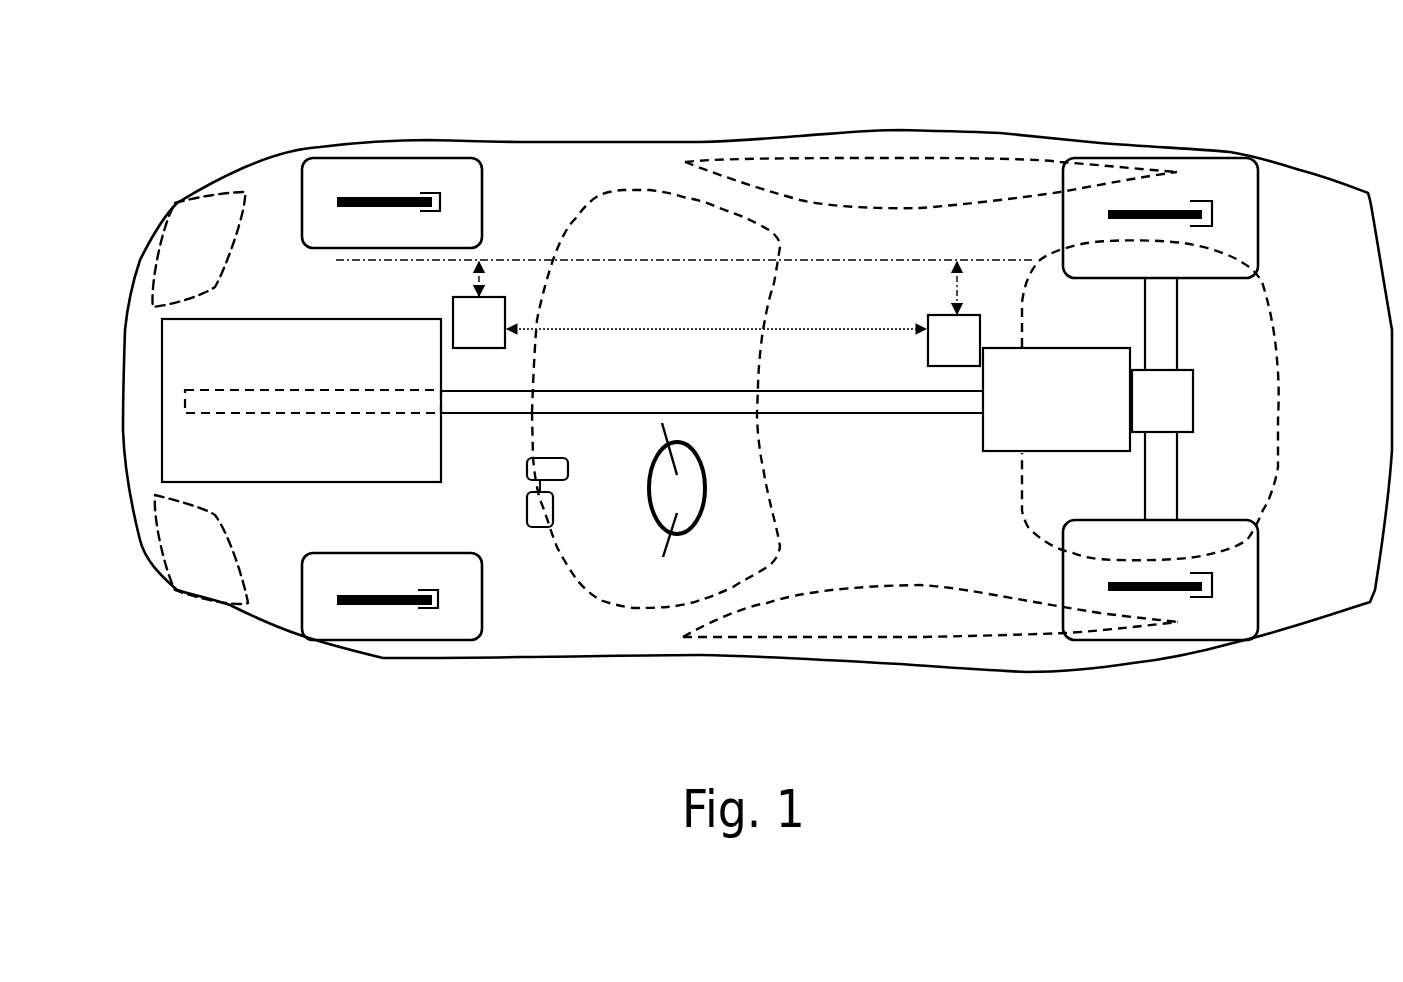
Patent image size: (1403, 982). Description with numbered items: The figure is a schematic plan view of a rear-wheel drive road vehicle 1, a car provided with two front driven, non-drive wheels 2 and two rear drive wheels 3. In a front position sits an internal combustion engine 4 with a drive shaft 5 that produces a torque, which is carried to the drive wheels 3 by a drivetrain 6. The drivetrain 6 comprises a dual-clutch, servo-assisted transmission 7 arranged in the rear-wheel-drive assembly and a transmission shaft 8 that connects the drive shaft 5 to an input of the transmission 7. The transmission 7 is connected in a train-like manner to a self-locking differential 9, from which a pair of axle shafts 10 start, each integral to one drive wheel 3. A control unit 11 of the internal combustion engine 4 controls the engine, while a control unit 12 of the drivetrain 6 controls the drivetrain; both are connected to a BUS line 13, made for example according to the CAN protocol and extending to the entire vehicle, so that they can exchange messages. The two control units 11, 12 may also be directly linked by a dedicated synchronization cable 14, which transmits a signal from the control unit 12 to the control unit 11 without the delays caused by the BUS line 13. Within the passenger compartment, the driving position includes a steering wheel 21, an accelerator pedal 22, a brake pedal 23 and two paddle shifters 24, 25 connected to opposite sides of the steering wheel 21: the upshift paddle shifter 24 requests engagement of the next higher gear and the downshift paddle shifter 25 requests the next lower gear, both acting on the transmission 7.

The road vehicle 1 is at (744, 416).
The front driven wheels 2 is at (322, 170).
The rear drive wheels 3 is at (1243, 178).
The internal combustion engine 4 is at (269, 395).
The drive shaft 5 is at (287, 400).
The drivetrain 6 is at (797, 118).
The dual-clutch, servo-assisted transmission 7 is at (1061, 390).
The transmission shaft 8 is at (820, 405).
The self-locking differential 9 is at (1160, 402).
The axle shafts 10 is at (1160, 340).
The control unit of the internal combustion engine 11 is at (479, 305).
The control unit of the drivetrain 12 is at (954, 314).
The BUS line 13 is at (628, 232).
The synchronization cable 14 is at (710, 329).
The steering wheel 21 is at (705, 490).
The accelerator pedal 22 is at (527, 464).
The brake pedal 23 is at (543, 512).
The upshift paddle shifter 24 is at (662, 427).
The downshift paddle shifter 25 is at (663, 557).